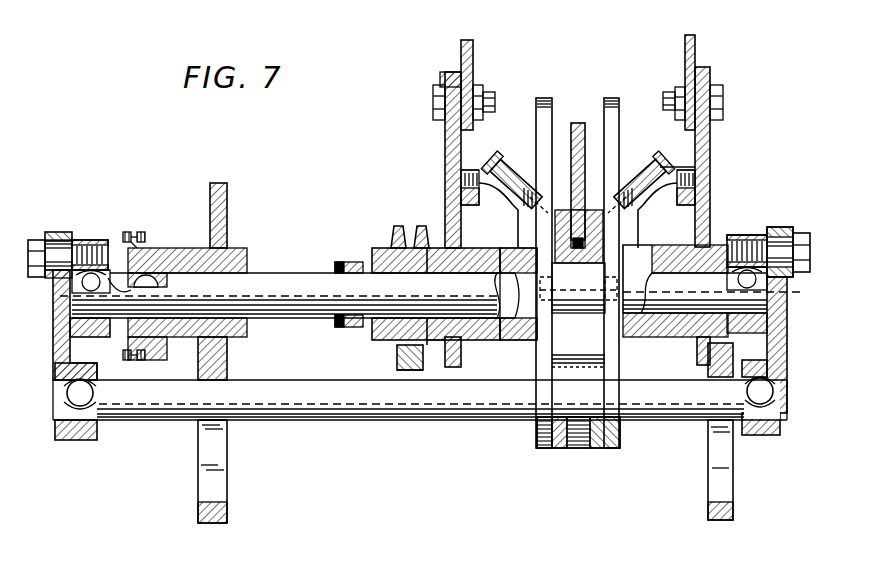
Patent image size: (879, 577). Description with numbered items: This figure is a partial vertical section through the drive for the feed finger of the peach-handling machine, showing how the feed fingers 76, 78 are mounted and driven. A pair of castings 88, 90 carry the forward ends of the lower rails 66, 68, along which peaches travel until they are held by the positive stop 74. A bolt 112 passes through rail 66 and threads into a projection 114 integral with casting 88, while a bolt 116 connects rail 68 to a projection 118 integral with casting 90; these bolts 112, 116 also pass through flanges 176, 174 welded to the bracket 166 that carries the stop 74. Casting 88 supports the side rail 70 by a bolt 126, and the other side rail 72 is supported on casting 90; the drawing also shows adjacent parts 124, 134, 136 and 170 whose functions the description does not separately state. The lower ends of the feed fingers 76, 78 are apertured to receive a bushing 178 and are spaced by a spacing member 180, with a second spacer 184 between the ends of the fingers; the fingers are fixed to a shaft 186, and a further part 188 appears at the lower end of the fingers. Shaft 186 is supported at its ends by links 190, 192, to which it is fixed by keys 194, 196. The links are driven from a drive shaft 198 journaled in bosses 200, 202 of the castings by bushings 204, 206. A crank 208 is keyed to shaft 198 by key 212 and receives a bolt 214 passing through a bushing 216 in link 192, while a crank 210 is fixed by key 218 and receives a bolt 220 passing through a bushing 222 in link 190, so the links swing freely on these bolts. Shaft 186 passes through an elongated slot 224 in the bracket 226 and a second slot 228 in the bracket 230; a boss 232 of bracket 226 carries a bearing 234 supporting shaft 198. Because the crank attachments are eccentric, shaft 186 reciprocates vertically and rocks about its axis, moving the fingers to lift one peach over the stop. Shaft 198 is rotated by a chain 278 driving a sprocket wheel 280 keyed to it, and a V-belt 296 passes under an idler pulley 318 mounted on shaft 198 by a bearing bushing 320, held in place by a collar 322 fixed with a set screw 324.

The lower rail 66 is at (445, 210).
The lower rail 68 is at (680, 175).
The side rail 70 is at (437, 82).
The side rail 72 is at (678, 87).
The positive stop 74 is at (578, 123).
The feed finger 76 is at (618, 98).
The feed finger 78 is at (543, 98).
The casting 88 is at (441, 155).
The casting 90 is at (716, 137).
The bolt 112 is at (530, 163).
The projection 114 is at (458, 183).
The bolt 116 is at (623, 162).
The projection 118 is at (710, 163).
The plate 124 is at (460, 60).
The bolt 126 is at (433, 103).
The plate 134 is at (697, 47).
The bolt 136 is at (723, 98).
The bracket 166 is at (620, 193).
The arm 170 is at (553, 222).
The flange 174 is at (645, 160).
The flange 176 is at (513, 163).
The bushing 178 is at (620, 420).
The spacing member 180 is at (557, 450).
The second spacer 184 is at (585, 287).
The shaft 186 is at (263, 412).
The bearing 188 is at (575, 450).
The link 190 is at (782, 347).
The second link 192 is at (53, 370).
The key 194 is at (770, 372).
The key 196 is at (87, 385).
The drive shaft 198 is at (263, 287).
The boss 200 is at (470, 340).
The boss 202 is at (668, 328).
The bushing 204 is at (440, 347).
The bushing 206 is at (702, 235).
The crank 208 is at (90, 240).
The crank 210 is at (752, 228).
The key 212 is at (90, 280).
The bolt 214 is at (38, 238).
The bushing 216 is at (58, 232).
The key 218 is at (770, 318).
The bolt 220 is at (803, 253).
The bushing 222 is at (785, 227).
The elongated slot 224 is at (200, 440).
The bracket 226 is at (213, 525).
The second slot 228 is at (723, 490).
The bracket 230 is at (708, 513).
The boss 232 is at (228, 255).
The bearing 234 is at (243, 338).
The chain 278 is at (140, 232).
The sprocket wheel 280 is at (165, 340).
The V-belt 296 is at (408, 370).
The idler pulley 318 is at (382, 248).
The bearing bushing 320 is at (392, 346).
The collar 322 is at (345, 327).
The set screw 324 is at (353, 260).